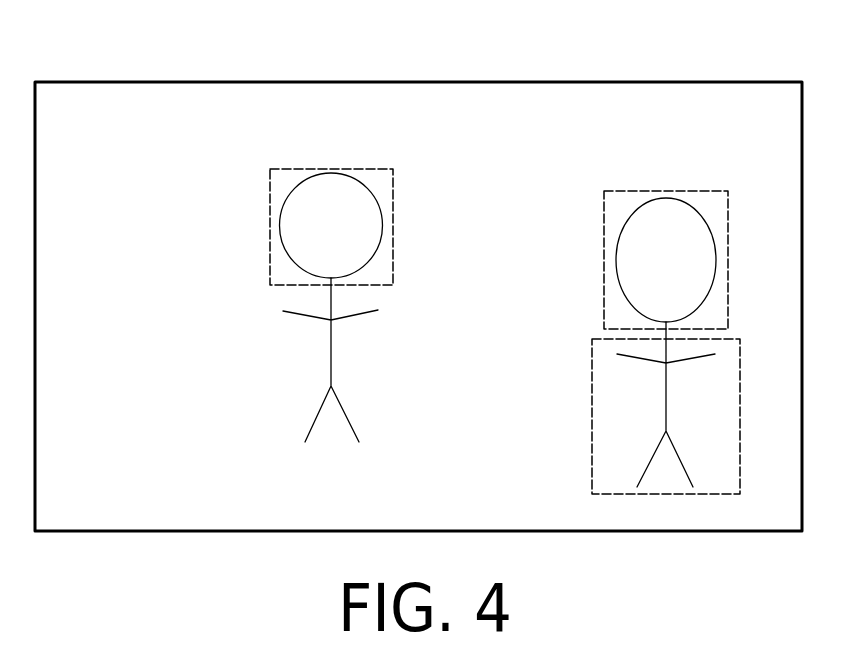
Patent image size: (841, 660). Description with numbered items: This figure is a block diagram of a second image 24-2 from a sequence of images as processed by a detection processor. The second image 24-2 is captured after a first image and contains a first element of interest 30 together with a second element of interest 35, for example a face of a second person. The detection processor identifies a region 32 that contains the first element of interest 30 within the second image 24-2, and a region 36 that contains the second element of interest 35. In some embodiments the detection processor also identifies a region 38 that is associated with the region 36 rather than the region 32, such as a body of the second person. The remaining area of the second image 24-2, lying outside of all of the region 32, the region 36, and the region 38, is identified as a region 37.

The second image 24-2 is at (163, 82).
The first element of interest 30 is at (420, 166).
The region 32 is at (270, 199).
The second element of interest 35 is at (710, 164).
The region 36 is at (604, 233).
The region 37 is at (119, 423).
The region 38 is at (592, 383).